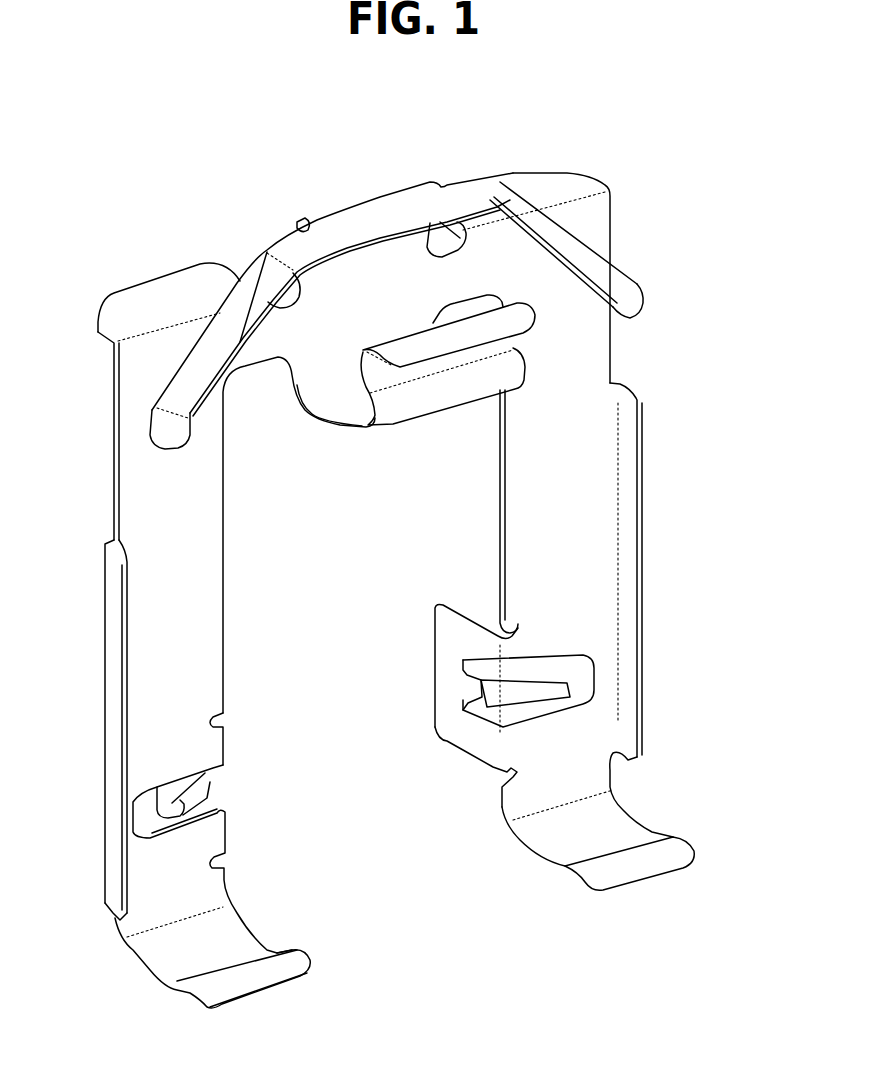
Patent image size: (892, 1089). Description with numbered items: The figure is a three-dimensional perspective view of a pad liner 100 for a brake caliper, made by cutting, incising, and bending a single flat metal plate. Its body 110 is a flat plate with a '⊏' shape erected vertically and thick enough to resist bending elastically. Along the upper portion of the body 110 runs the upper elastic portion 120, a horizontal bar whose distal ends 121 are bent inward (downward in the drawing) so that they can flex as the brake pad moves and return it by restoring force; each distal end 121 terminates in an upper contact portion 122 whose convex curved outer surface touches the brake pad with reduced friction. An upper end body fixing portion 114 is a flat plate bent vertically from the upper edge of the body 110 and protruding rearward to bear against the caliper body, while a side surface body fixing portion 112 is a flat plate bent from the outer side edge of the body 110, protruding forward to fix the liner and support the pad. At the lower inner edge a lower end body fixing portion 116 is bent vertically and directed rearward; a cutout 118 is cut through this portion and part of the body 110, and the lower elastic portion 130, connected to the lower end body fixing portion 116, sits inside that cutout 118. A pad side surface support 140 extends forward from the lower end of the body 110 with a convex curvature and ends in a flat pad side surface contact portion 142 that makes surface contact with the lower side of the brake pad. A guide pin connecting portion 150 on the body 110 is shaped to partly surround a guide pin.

The pad liner 100 is at (140, 113).
The body 110 is at (581, 433).
The side surface body fixing portion 112 is at (635, 529).
The upper end body fixing portion 114 is at (548, 183).
The lower end body fixing portion 116 is at (446, 630).
The cutout 118 is at (582, 683).
The upper elastic portion 120 is at (565, 231).
The distal end 121 is at (651, 280).
The upper contact portion 122 is at (640, 298).
The lower elastic portion 130 is at (488, 700).
The pad side surface support 140 is at (623, 820).
The pad side surface contact portion 142 is at (680, 847).
The guide pin connecting portion 150 is at (397, 377).